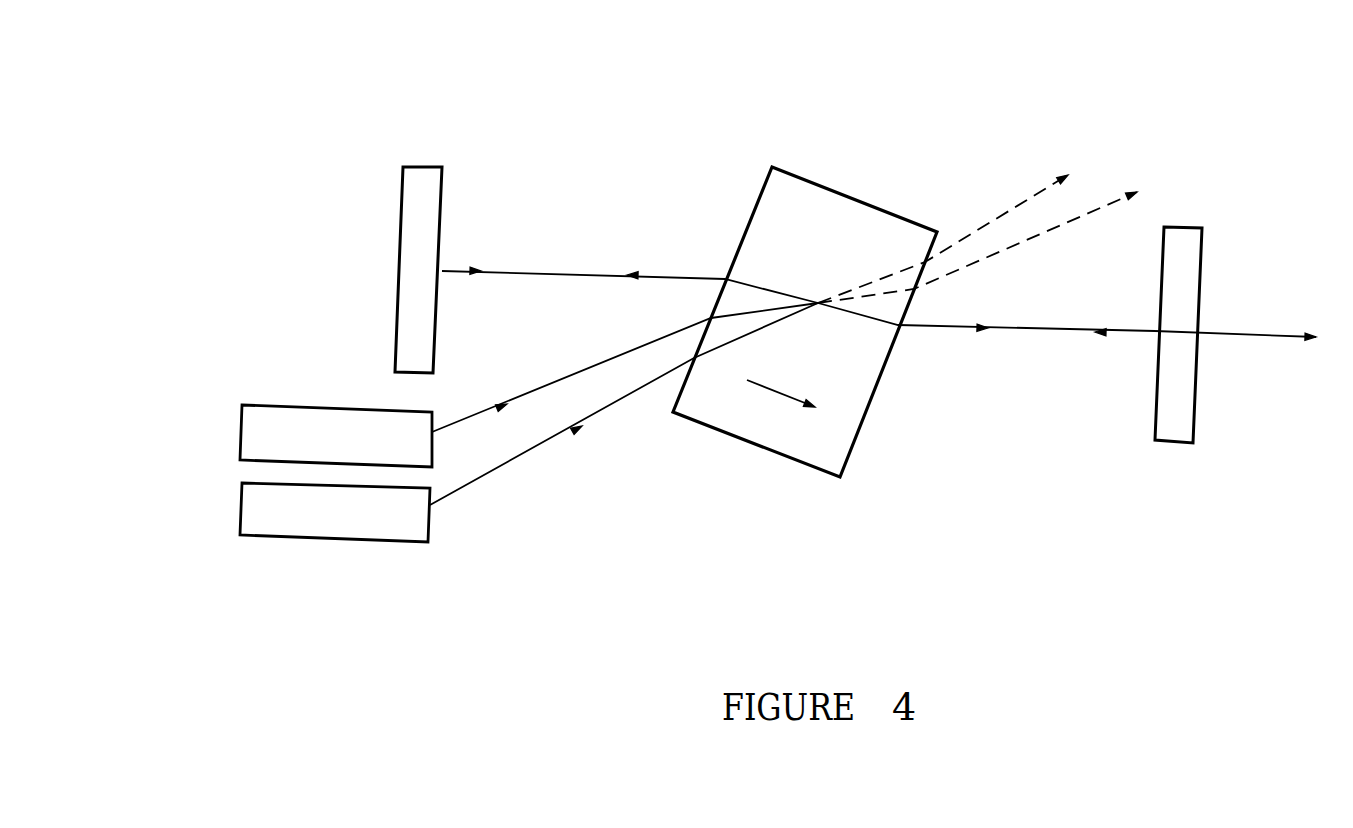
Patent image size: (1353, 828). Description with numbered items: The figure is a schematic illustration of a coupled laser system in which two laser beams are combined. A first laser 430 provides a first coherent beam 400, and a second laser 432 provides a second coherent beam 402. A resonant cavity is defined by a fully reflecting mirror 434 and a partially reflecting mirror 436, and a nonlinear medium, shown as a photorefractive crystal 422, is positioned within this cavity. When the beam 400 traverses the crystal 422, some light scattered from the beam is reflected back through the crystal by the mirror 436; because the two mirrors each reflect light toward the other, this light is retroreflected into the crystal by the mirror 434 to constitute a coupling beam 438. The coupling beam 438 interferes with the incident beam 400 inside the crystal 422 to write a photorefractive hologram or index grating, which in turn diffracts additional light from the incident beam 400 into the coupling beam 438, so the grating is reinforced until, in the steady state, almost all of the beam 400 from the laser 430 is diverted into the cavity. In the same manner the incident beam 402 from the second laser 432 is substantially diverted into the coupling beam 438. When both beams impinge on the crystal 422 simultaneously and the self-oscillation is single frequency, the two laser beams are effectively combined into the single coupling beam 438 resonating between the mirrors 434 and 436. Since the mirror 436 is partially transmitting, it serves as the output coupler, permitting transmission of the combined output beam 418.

The first coherent beam 400 is at (523, 393).
The second coherent beam 402 is at (515, 463).
The combined output beam 418 is at (1272, 333).
The photorefractive crystal 422 is at (840, 188).
The first laser 430 is at (303, 405).
The second laser 432 is at (357, 542).
The 100% reflecting mirror 434 is at (422, 163).
The partially reflecting mirror 436 is at (1187, 223).
The coupling beam 438 is at (595, 272).